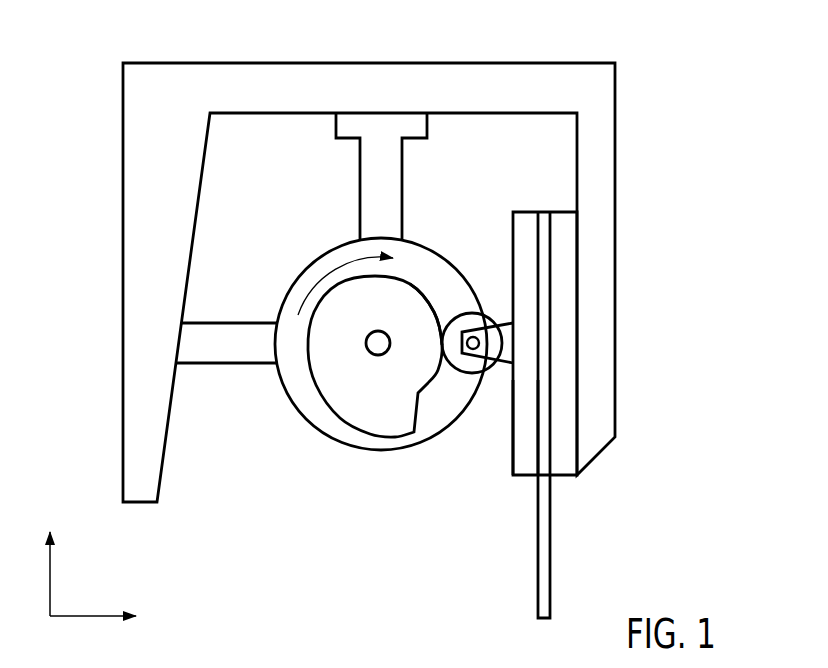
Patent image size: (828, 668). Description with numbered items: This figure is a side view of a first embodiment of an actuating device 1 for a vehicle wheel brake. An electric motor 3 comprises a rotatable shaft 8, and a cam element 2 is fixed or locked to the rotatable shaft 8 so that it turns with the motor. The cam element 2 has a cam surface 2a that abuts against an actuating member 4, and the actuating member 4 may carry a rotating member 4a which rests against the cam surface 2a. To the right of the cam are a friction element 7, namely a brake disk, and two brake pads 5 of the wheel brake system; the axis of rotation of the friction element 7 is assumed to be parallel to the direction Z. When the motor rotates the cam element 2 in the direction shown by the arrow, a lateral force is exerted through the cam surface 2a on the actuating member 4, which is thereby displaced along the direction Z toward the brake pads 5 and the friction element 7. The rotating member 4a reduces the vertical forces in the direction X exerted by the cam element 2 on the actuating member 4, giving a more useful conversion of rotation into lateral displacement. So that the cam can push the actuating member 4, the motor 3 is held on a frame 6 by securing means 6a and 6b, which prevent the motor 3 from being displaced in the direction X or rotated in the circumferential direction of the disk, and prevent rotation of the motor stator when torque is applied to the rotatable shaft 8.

The actuating device 1 is at (90, 60).
The cam element 2 is at (325, 383).
The cam surface 2a is at (428, 290).
The electric motor 3 is at (431, 238).
The actuating member 4 is at (494, 380).
The rotating member 4a is at (482, 328).
The brake pads 5 is at (560, 408).
The frame 6 is at (302, 78).
The securing means 6a is at (360, 193).
The securing means 6b is at (212, 352).
The friction element 7 is at (547, 212).
The rotatable shaft 8 is at (378, 356).